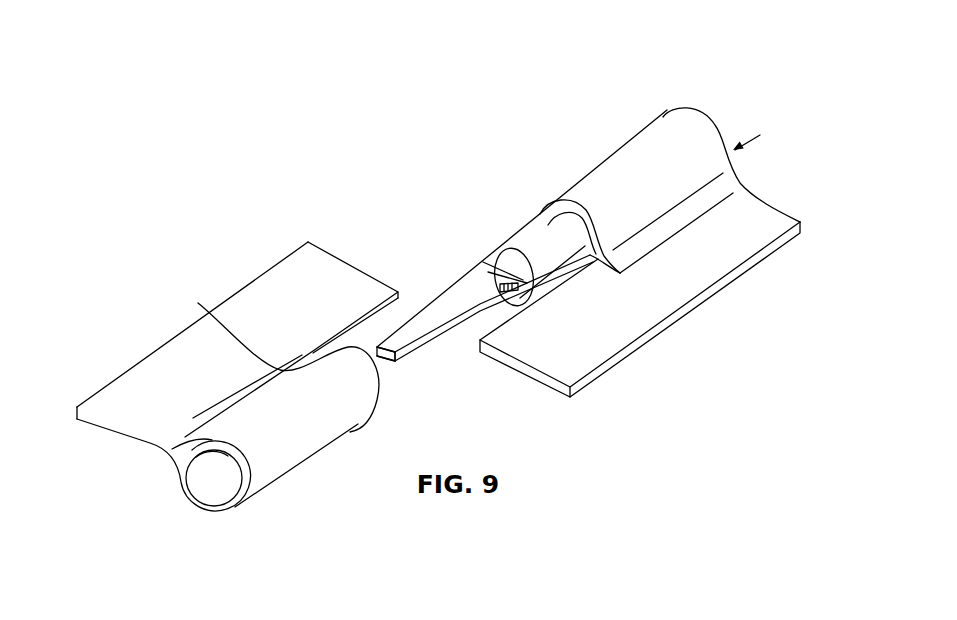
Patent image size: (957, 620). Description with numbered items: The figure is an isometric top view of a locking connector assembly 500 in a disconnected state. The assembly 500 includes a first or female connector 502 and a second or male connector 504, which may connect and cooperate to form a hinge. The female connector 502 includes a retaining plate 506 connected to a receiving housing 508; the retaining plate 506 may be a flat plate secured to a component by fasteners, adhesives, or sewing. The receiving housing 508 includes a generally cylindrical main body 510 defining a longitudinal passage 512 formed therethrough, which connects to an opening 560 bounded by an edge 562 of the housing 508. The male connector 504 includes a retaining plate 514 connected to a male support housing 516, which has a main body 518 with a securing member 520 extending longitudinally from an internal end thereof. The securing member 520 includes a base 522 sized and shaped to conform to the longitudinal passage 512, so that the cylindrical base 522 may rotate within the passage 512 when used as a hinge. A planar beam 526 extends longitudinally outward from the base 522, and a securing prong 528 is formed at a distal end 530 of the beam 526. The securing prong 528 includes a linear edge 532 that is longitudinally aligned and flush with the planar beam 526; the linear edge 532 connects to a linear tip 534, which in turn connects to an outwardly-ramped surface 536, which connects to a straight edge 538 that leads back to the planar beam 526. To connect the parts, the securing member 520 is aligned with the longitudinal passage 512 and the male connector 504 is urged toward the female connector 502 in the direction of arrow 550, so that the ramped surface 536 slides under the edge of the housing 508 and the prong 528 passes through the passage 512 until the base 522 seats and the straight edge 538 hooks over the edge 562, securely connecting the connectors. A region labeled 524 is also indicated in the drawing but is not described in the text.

The locking connector assembly 500 is at (122, 234).
The female connector 502 is at (111, 366).
The male connector 504 is at (648, 98).
The retaining plate 506 is at (313, 270).
The receiving housing 508 is at (272, 467).
The main body 510 is at (333, 422).
The longitudinal passage 512 is at (222, 492).
The retaining plate 514 is at (660, 307).
The male support housing 516 is at (607, 182).
The main body 518 is at (693, 142).
The securing member 520 is at (510, 238).
The base 522 is at (548, 205).
The slot 524 is at (548, 268).
The planar beam 526 is at (447, 360).
The securing prong 528 is at (410, 304).
The distal end 530 is at (413, 357).
The linear edge 532 is at (397, 363).
The linear tip 534 is at (287, 356).
The outwardly-ramped surface 536 is at (348, 333).
The straight edge 538 is at (414, 304).
The arrow 550 is at (760, 136).
The opening 560 is at (200, 481).
The edge 562 is at (183, 465).